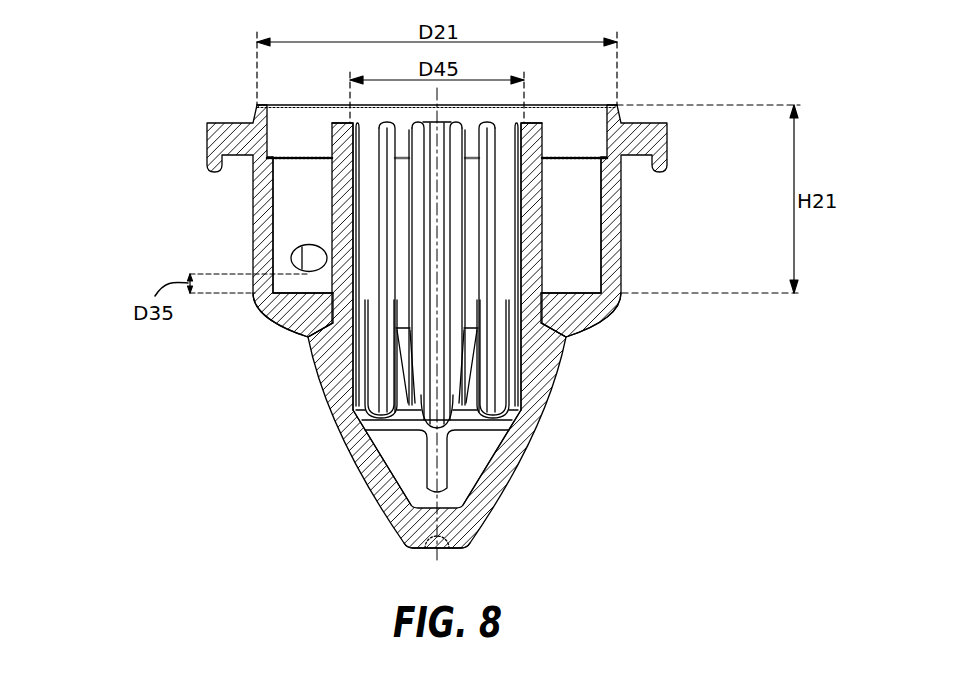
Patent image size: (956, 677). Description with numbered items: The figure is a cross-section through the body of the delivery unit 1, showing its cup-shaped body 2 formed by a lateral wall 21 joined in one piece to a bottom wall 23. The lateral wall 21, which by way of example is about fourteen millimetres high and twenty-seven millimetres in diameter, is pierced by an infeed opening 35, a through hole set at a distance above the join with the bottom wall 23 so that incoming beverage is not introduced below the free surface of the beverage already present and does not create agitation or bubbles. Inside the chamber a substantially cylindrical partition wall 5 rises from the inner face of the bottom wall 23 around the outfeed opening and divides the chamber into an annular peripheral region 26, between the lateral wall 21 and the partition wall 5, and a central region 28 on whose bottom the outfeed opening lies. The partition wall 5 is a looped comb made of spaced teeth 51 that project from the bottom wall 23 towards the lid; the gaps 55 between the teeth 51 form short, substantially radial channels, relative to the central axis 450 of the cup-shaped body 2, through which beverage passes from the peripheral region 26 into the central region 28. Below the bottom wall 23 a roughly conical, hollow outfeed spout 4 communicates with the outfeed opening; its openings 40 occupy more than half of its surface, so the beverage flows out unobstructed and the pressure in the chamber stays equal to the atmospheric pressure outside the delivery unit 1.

The delivery unit 1 is at (158, 95).
The cup-shaped body 2 is at (247, 193).
The lateral wall 21 is at (262, 217).
The bottom wall 23 is at (292, 318).
The peripheral region 26 is at (318, 226).
The central region 28 is at (407, 178).
The infeed opening 35 is at (312, 258).
The outfeed spout 4 is at (562, 377).
The partition wall 5 is at (548, 267).
The teeth 51 is at (500, 253).
The gaps 55 is at (402, 312).
The central axis 450 is at (438, 440).
The openings 40 is at (463, 472).